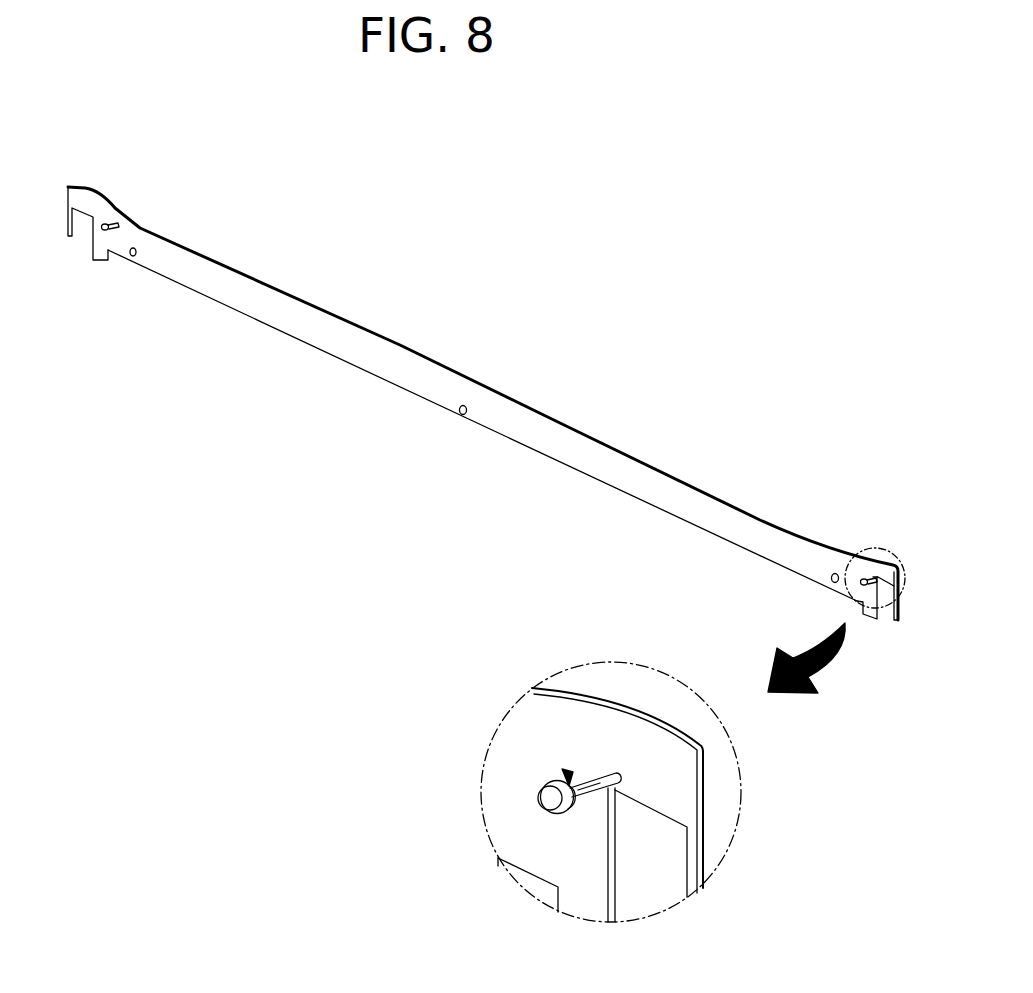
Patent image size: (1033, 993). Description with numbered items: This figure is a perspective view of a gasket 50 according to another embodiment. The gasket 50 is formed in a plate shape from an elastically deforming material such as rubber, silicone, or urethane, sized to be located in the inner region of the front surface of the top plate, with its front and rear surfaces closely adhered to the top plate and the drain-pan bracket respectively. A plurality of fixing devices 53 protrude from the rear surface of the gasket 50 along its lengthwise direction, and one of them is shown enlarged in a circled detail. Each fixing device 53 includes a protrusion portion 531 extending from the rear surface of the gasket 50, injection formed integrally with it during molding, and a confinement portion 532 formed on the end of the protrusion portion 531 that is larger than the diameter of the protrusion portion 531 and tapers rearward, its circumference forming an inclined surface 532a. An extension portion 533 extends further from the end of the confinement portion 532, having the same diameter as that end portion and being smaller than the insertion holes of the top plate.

The gasket 50 is at (146, 190).
The fixing device 53 is at (114, 216).
The protrusion portion 531 is at (543, 790).
The confinement portion 532 is at (595, 768).
The inclined surface 532a is at (580, 808).
The extension portion 533 is at (566, 768).